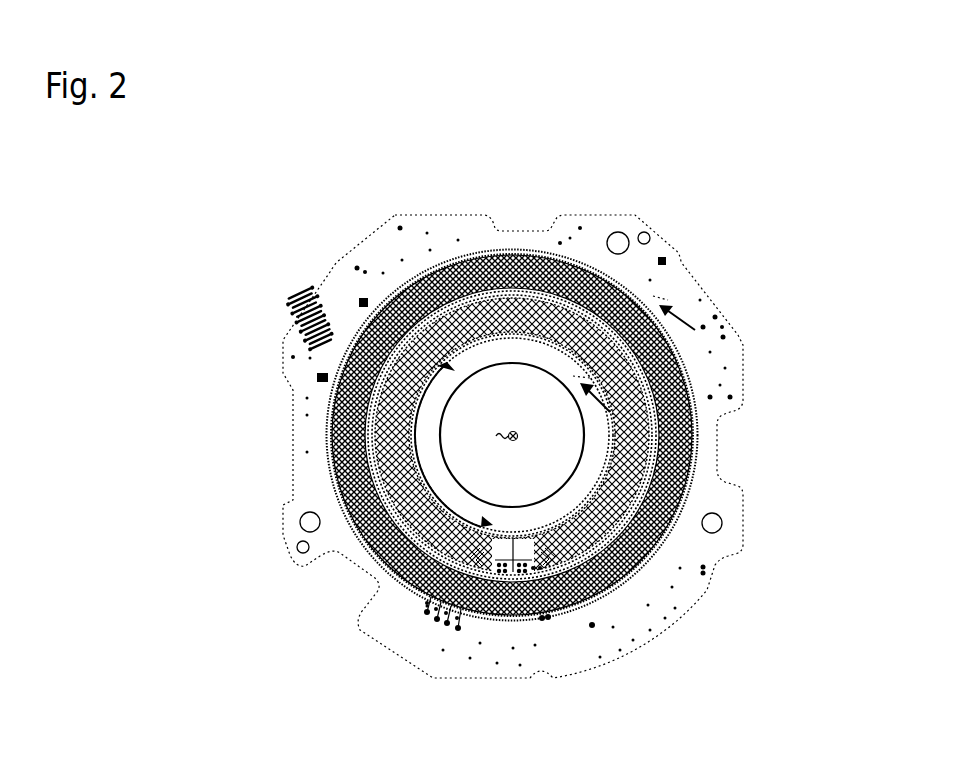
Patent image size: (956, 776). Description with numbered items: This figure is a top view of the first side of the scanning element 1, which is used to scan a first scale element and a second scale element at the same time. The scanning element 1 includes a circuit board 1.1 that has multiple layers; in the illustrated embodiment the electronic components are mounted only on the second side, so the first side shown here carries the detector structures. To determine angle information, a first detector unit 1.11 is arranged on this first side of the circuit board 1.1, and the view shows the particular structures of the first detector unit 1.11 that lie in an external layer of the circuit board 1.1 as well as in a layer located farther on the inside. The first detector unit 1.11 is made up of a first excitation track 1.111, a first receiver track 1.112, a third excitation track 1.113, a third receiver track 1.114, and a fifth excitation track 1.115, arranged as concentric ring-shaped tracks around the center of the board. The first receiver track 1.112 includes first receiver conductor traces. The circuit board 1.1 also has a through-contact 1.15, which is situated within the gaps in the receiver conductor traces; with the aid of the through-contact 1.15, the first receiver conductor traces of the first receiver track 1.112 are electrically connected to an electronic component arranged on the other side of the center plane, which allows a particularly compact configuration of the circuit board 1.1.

The scanning element 1 is at (286, 284).
The circuit board 1.1 is at (386, 246).
The first detector unit 1.11 is at (332, 393).
The first excitation track 1.111 is at (443, 519).
The first receiver track 1.112 is at (644, 404).
The third excitation track 1.113 is at (383, 490).
The third receiver track 1.114 is at (666, 462).
The fifth excitation track 1.115 is at (330, 437).
The through-contact 1.15 is at (540, 572).